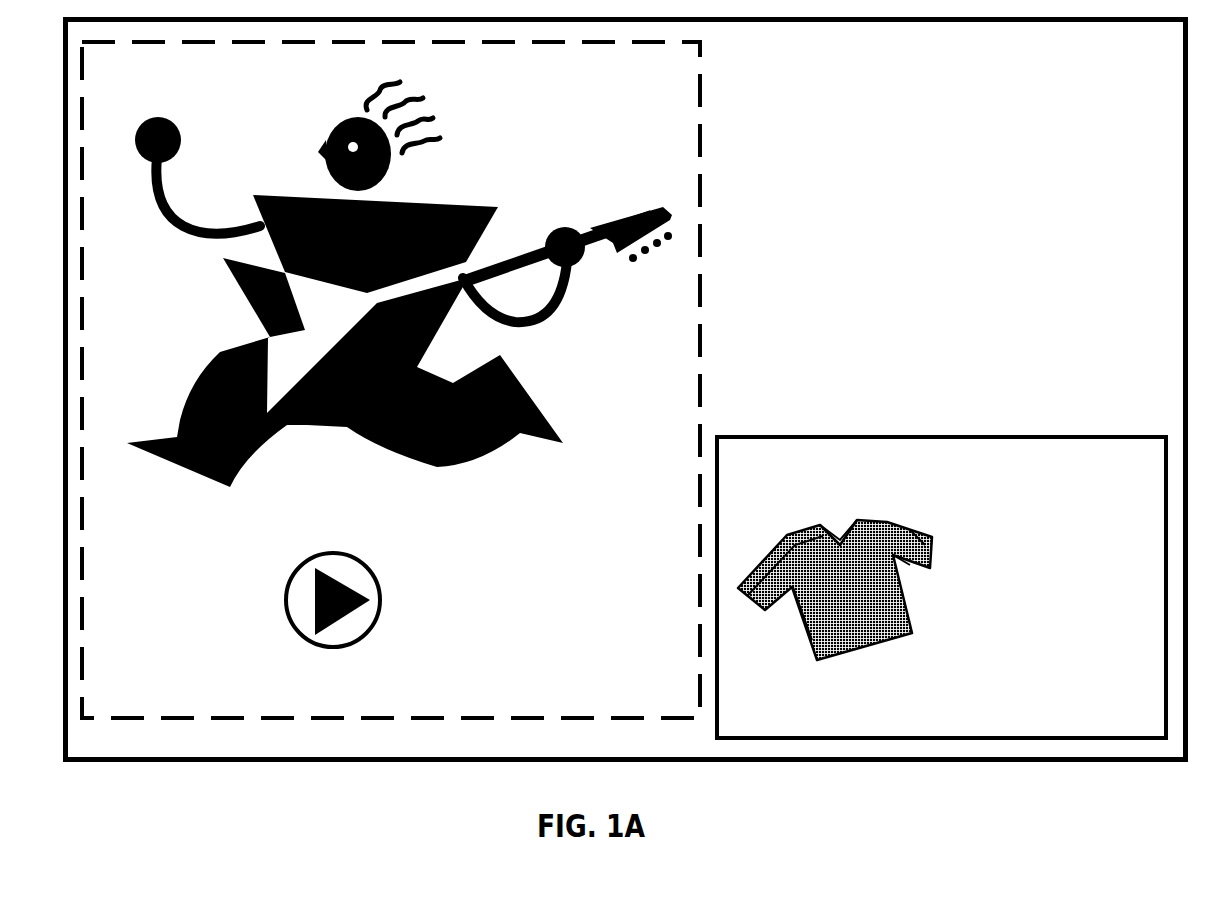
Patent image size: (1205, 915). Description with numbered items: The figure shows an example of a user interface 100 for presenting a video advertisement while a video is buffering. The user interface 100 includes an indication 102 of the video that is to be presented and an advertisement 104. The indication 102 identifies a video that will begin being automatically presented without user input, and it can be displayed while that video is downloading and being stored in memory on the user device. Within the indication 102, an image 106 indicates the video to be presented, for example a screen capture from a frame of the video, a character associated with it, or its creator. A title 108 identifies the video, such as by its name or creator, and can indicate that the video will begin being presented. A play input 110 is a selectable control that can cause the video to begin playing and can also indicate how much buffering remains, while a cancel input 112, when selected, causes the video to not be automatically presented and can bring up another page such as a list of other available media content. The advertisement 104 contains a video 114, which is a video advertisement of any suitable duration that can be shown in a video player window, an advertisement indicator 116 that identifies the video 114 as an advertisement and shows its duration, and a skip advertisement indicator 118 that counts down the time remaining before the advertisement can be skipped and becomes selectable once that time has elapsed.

The user interface 100 is at (1157, 59).
The indication 102 is at (647, 97).
The advertisement 104 is at (972, 457).
The image 106 is at (413, 200).
The title 108 is at (533, 522).
The play input 110 is at (368, 610).
The cancel input 112 is at (353, 655).
The video 114 is at (867, 524).
The advertisement indicator 116 is at (825, 700).
The skip advertisement indicator 118 is at (1045, 565).